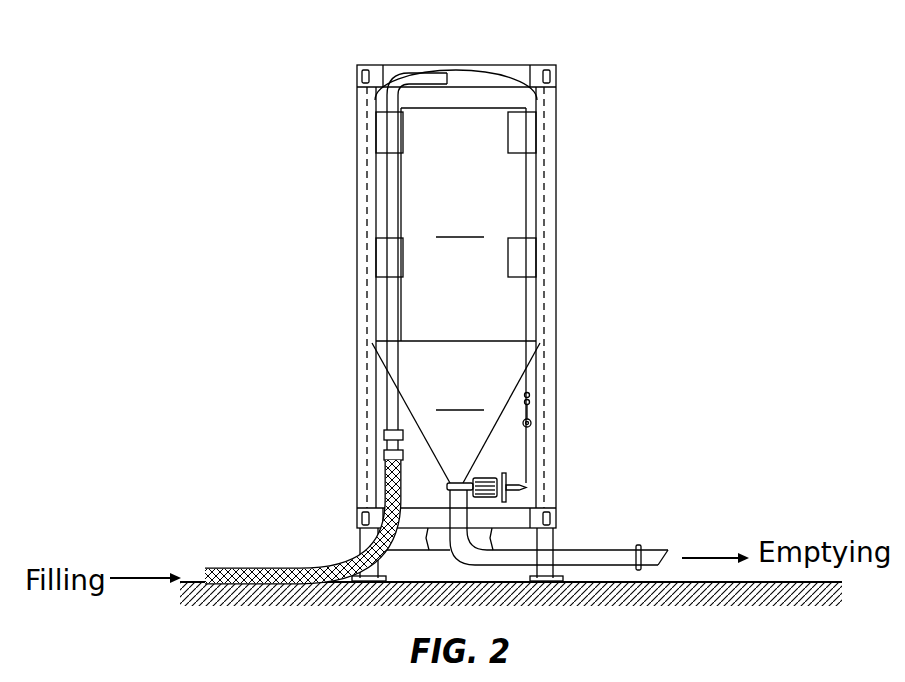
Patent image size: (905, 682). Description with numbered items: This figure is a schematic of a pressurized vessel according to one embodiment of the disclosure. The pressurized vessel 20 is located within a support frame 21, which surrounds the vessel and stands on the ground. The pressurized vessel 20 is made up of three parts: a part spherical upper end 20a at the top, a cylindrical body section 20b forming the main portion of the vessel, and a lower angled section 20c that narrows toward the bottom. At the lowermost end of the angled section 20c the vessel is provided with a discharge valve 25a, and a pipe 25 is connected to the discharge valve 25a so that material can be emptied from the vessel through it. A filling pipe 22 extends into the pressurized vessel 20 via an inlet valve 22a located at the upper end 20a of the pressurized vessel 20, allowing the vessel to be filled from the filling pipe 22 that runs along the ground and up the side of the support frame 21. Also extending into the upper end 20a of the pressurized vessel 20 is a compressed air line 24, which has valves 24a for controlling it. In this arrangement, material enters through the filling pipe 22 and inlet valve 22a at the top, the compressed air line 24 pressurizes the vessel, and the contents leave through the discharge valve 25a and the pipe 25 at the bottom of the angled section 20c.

The pressurized vessel 20 is at (416, 254).
The part spherical upper end 20a is at (474, 79).
The cylindrical body section 20b is at (463, 224).
The lower angled section 20c is at (456, 412).
The support frame 21 is at (357, 258).
The filling pipe 22 is at (277, 570).
The inlet valve 22a is at (455, 66).
The compressed air line 24 is at (528, 303).
The valves 24a is at (533, 400).
The pipe 25 is at (600, 549).
The discharge valve 25a is at (490, 483).